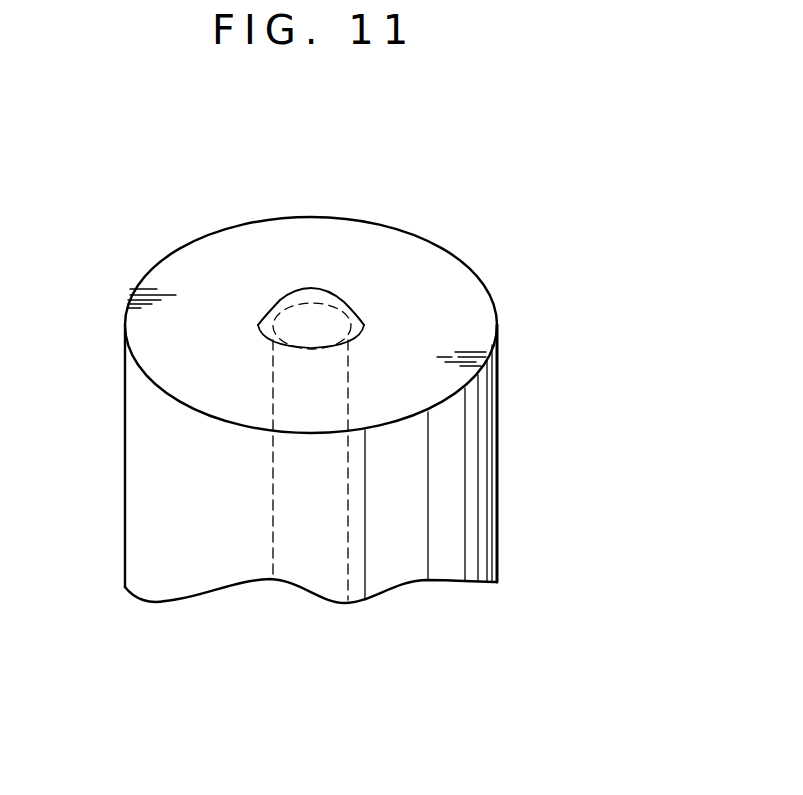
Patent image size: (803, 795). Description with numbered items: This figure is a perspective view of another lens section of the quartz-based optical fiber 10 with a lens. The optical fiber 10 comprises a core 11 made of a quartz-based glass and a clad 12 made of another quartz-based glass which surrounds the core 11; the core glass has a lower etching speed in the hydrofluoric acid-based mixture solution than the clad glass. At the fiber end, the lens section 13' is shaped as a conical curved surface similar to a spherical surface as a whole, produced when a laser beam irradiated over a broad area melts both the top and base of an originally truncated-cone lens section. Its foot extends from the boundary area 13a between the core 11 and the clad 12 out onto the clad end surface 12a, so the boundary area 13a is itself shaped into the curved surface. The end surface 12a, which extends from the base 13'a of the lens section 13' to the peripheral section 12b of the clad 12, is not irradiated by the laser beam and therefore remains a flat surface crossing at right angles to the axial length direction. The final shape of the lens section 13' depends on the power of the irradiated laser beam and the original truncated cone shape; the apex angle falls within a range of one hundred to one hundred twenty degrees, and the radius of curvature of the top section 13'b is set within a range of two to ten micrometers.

The optical fiber 10 is at (557, 387).
The core 11 is at (288, 470).
The clad 12 is at (470, 444).
The end surface 12a is at (383, 293).
The peripheral section 12b is at (388, 242).
The boundary area 13a is at (362, 326).
The lens section 13' is at (267, 224).
The base of the lens section 13'a is at (229, 239).
The top section 13'b is at (318, 239).